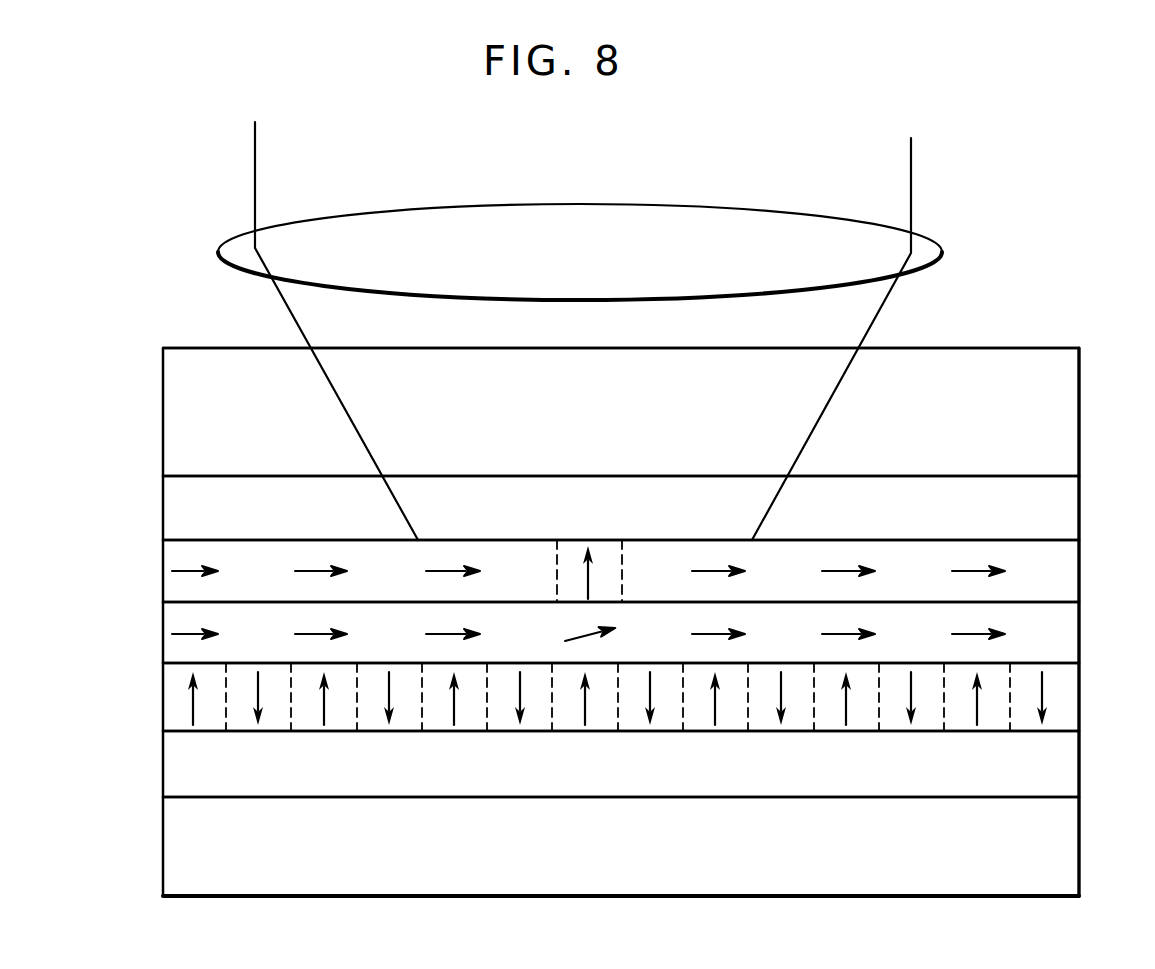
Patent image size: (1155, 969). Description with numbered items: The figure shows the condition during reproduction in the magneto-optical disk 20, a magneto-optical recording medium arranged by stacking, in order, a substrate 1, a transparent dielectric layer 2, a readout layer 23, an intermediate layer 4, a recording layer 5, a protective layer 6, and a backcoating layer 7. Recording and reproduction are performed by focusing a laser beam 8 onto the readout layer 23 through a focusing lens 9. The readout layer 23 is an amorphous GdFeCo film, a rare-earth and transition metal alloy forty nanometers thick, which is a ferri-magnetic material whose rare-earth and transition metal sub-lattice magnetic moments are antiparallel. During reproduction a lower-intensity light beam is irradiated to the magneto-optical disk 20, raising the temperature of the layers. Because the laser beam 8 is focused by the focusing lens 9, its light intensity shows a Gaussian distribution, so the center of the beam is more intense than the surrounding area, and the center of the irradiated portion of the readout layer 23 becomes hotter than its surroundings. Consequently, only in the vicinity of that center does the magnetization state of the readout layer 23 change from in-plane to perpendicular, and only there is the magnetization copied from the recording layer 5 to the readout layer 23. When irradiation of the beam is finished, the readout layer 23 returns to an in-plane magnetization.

The substrate 1 is at (1082, 414).
The transparent dielectric layer 2 is at (1082, 508).
The readout layer 23 is at (1082, 574).
The intermediate layer 4 is at (1082, 640).
The recording layer 5 is at (1082, 710).
The protective layer 6 is at (1082, 770).
The backcoating layer 7 is at (1076, 847).
The laser beam 8 is at (912, 172).
The focusing lens 9 is at (937, 240).
The magneto-optical disk 20 is at (1046, 337).